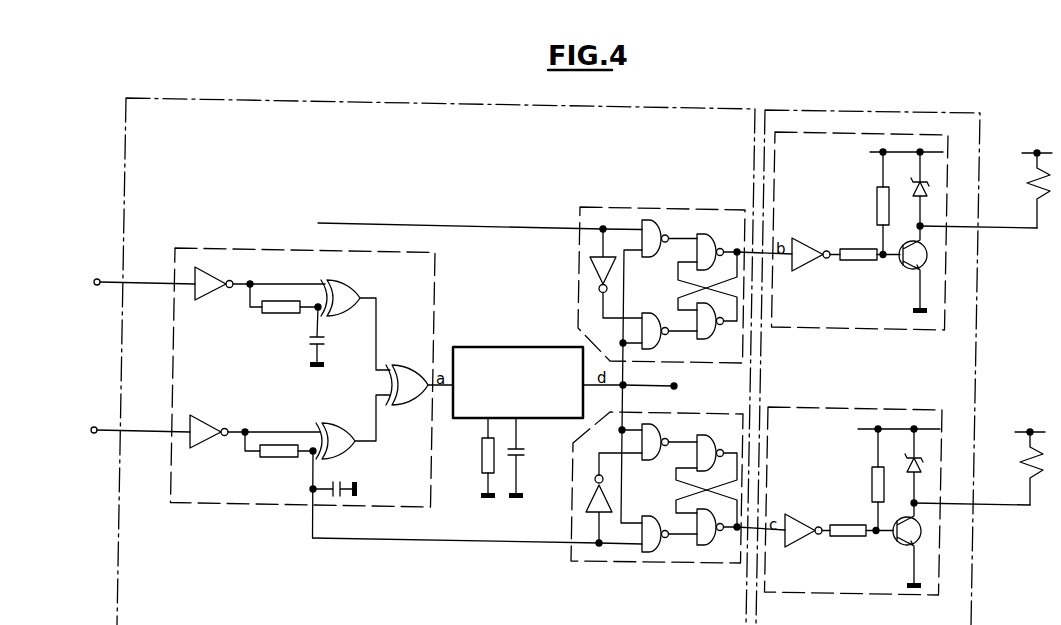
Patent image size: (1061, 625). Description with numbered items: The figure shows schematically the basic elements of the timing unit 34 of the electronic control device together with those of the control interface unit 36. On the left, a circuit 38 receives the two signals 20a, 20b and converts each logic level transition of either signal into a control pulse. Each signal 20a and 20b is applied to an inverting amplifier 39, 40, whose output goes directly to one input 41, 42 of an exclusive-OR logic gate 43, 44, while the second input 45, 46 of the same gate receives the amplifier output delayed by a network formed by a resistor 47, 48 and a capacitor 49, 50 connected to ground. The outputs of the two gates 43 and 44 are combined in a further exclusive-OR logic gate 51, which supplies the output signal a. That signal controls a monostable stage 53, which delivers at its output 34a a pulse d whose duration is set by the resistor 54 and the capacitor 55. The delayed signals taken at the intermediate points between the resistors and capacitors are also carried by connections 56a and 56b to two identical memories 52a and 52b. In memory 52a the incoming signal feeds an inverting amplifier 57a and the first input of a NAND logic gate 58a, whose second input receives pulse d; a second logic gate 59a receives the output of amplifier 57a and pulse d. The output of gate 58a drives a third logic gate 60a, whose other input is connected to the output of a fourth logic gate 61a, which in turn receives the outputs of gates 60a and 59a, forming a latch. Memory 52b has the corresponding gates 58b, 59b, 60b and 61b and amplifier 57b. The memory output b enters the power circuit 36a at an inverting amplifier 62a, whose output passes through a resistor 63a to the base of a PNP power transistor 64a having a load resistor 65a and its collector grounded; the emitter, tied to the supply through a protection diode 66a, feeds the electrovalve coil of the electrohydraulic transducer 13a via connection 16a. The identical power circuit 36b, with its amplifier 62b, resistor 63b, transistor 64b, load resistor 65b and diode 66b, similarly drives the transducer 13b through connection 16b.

The timing unit 34 is at (315, 98).
The control interface unit 36 is at (869, 110).
The signal 20a is at (104, 278).
The signal 20b is at (101, 426).
The circuit 38 is at (249, 248).
The inverting amplifier 39 is at (206, 292).
The inverting amplifier 40 is at (207, 425).
The input 41 is at (289, 284).
The input 42 is at (281, 431).
The logic gate 43 is at (347, 286).
The logic gate 44 is at (339, 426).
The second input 45 is at (306, 315).
The second input 46 is at (307, 458).
The resistor 47 is at (270, 315).
The resistor 48 is at (275, 458).
The capacitor 49 is at (326, 342).
The capacitor 50 is at (338, 486).
The logic gate 51 is at (416, 403).
The monostable stage 53 is at (516, 352).
The resistor 54 is at (482, 456).
The capacitor 55 is at (524, 453).
The connection 56a is at (521, 227).
The connection 56b is at (515, 543).
The inverting amplifier 57a is at (590, 274).
The inverting amplifier 57b is at (588, 499).
The memory 52a is at (620, 207).
The memory 52b is at (622, 563).
The logic gate 58a is at (656, 222).
The logic gate 58b is at (655, 554).
The second logic gate 59a is at (652, 313).
The second logic gate 59b is at (652, 460).
The third logic gate 60a is at (706, 234).
The third logic gate 60b is at (706, 548).
The fourth logic gate 61a is at (704, 339).
The fourth logic gate 61b is at (705, 435).
The output 34a is at (677, 386).
The power circuit 36a is at (855, 330).
The power circuit 36b is at (854, 407).
The inverting amplifier 62a is at (808, 240).
The inverting amplifier 62b is at (802, 516).
The resistor 63a is at (857, 249).
The resistor 63b is at (847, 525).
The power transistor 64a is at (904, 270).
The power transistor 64b is at (898, 548).
The load resistor 65a is at (877, 201).
The load resistor 65b is at (872, 478).
The protection diode 66a is at (915, 185).
The protection diode 66b is at (910, 463).
The connection 16a is at (985, 229).
The connection 16b is at (978, 506).
The electrohydraulic transducer 13a is at (1032, 190).
The electrohydraulic transducer 13b is at (1026, 465).